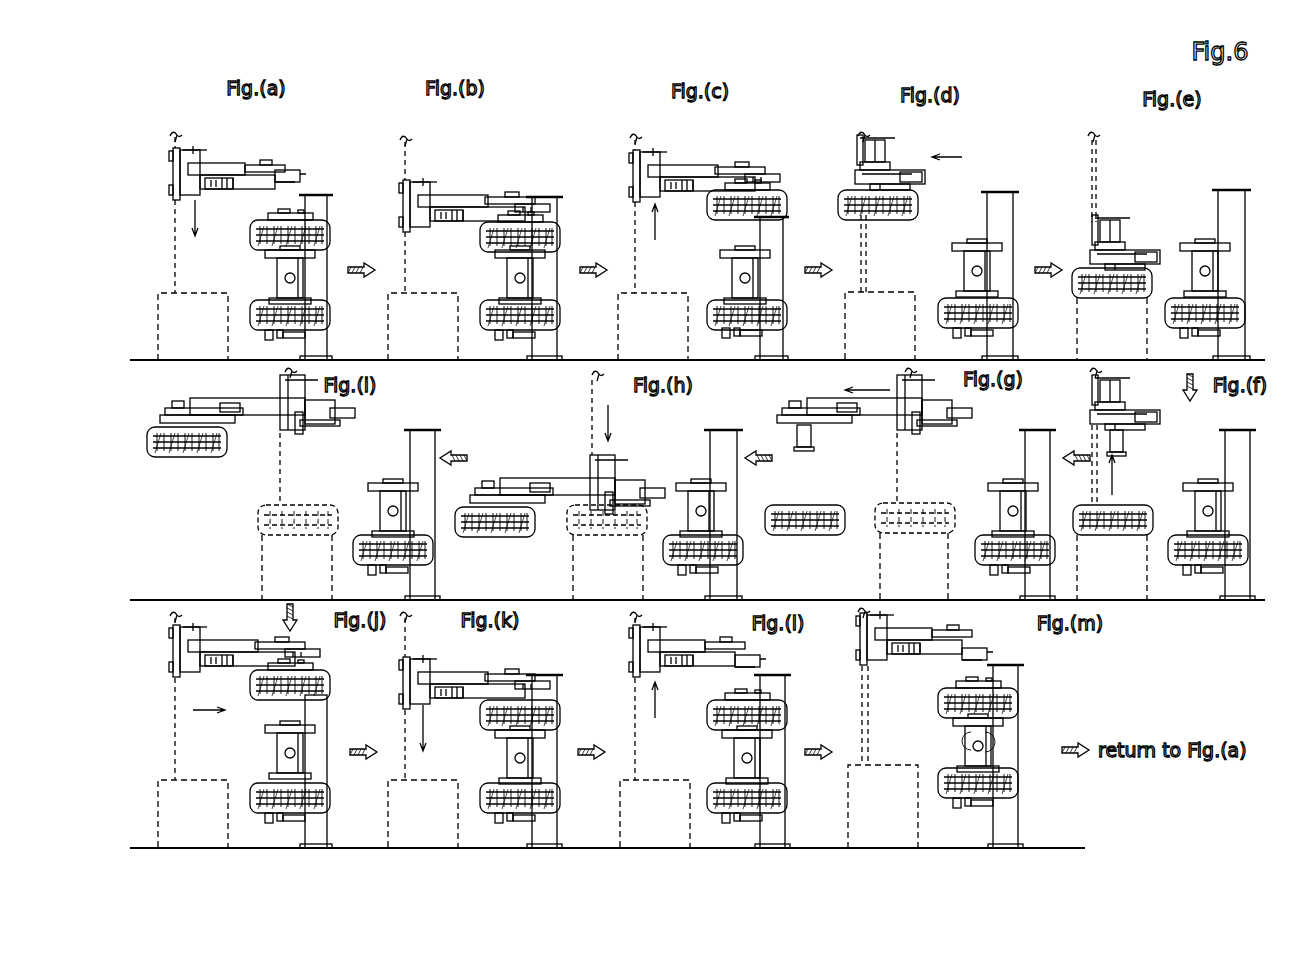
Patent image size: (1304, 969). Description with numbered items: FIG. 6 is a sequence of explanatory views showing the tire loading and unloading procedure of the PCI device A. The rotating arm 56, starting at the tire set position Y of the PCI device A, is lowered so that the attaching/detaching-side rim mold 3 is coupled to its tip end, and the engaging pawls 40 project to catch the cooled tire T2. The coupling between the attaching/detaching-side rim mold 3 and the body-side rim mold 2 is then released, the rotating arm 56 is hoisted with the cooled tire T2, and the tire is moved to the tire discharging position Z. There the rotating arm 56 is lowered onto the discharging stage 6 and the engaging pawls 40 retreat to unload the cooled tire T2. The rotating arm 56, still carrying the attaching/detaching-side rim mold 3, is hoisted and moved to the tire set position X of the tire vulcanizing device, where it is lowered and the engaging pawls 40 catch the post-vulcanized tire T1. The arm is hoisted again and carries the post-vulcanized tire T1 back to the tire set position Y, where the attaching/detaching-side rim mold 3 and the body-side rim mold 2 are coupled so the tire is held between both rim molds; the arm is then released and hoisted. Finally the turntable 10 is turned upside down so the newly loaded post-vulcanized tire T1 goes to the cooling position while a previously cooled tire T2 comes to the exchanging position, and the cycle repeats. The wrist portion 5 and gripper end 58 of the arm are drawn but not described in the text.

The body-side rim mold 2 is at (770, 243).
The attaching/detaching-side rim mold 3 is at (265, 218).
The robot wrist 5 is at (263, 163).
The discharging stage 6 is at (158, 302).
The turntable 10 is at (968, 741).
The engaging pawls 40 is at (1119, 447).
The rotating arm 56 is at (232, 163).
The gripper head 58 is at (300, 186).
The PCI device A is at (334, 198).
The post-vulcanized tire T1 is at (815, 535).
The cooled tire T2 is at (251, 242).
The tire set position of the tire vulcanizing device X is at (809, 497).
The tire set position of the PCI device Y is at (277, 285).
The tire discharging position Z is at (889, 290).